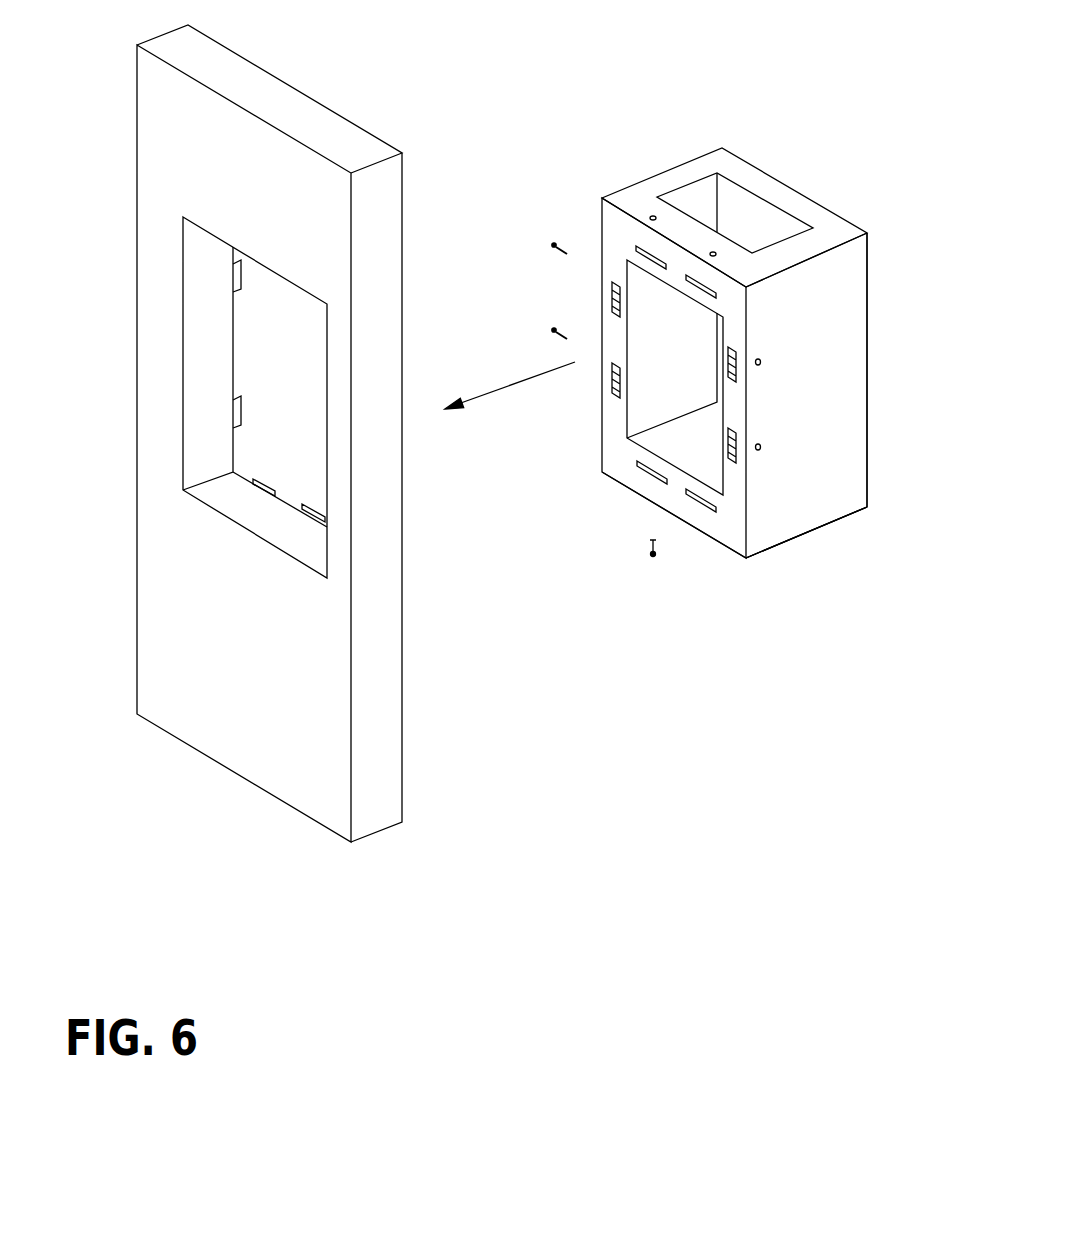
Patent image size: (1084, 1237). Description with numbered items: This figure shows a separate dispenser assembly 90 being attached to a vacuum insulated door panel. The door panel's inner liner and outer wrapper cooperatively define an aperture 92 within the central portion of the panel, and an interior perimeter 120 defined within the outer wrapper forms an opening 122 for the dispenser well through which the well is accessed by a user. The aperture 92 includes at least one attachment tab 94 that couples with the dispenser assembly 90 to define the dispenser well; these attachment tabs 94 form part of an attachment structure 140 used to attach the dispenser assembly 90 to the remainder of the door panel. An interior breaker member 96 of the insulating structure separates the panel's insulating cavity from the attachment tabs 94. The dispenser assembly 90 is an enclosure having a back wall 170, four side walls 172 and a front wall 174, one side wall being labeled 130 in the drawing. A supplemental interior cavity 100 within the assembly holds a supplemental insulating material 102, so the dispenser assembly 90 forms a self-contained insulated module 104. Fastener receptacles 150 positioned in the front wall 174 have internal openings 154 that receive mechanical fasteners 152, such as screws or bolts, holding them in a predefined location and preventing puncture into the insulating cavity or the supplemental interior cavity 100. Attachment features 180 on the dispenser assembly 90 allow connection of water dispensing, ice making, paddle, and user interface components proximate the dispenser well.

The dispenser assembly 90 is at (777, 144).
The aperture 92 is at (183, 346).
The attachment tab 94 is at (243, 278).
The interior breaker member 96 is at (200, 398).
The interior perimeter 120 is at (183, 292).
The opening 122 is at (236, 506).
The attachment structure 140 is at (300, 487).
The side wall 130 is at (838, 287).
The side wall 172 is at (817, 375).
The internal opening 154 is at (761, 447).
The supplemental interior cavity 100 is at (838, 466).
The supplemental insulating material 102 is at (830, 465).
The insulated module 104 is at (781, 565).
The fastener receptacle 150 is at (700, 505).
The mechanical fastener 152 is at (650, 548).
The front wall 174 is at (617, 458).
The attachment feature 180 is at (596, 250).
The back wall 170 is at (758, 233).